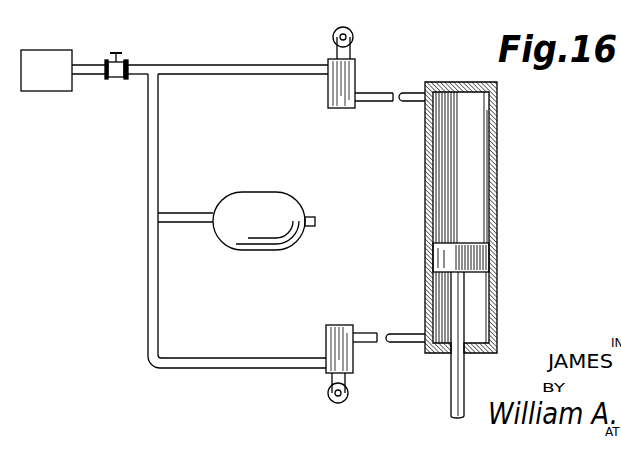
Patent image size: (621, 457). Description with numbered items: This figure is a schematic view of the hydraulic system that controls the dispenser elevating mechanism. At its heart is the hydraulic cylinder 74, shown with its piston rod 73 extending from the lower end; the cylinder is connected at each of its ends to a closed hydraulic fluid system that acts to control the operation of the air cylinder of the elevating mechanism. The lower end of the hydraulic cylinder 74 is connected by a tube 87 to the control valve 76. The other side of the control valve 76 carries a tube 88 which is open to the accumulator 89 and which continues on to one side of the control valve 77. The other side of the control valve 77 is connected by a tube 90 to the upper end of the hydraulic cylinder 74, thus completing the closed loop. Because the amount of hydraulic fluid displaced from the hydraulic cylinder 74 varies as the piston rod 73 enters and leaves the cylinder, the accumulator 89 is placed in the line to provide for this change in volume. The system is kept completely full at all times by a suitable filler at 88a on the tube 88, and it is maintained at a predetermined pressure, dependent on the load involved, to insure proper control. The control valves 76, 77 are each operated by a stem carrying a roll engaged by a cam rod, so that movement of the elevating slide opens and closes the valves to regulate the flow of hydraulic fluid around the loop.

The filler 88a is at (47, 57).
The tube 88 is at (148, 320).
The accumulator 89 is at (259, 203).
The hydraulic control valve 77 is at (335, 92).
The hydraulic control valve 76 is at (333, 335).
The tube 90 is at (410, 103).
The tube 87 is at (415, 338).
The hydraulic cylinder 74 is at (497, 202).
The piston rod 73 is at (460, 310).